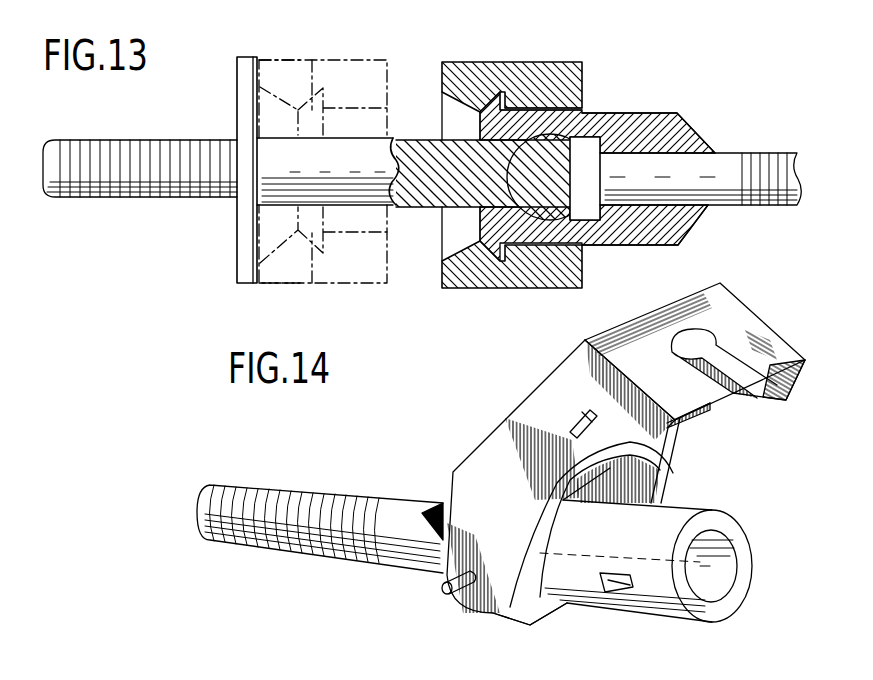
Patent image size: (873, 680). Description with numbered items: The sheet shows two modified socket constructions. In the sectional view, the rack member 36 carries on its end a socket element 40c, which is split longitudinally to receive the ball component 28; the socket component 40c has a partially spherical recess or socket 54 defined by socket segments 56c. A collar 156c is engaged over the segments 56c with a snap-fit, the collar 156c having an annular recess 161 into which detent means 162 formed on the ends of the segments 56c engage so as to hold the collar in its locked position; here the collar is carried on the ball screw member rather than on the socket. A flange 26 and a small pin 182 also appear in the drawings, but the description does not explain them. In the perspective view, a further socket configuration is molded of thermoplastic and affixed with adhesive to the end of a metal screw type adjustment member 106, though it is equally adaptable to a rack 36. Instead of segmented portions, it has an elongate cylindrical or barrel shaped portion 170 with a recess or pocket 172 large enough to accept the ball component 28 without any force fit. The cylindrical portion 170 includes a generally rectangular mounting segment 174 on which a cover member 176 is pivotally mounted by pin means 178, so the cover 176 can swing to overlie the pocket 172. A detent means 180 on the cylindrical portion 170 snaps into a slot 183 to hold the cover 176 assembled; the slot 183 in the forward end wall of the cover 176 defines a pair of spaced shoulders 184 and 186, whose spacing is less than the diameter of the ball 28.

In FIG. 13, the flange 26 is at (257, 203).
In FIG. 13, the ball component 28 is at (588, 213).
In FIG. 13, the rack member 36 is at (735, 162).
In FIG. 13, the socket element 40c is at (645, 120).
In FIG. 14, the socket element 40c is at (800, 314).
In FIG. 13, the partially spherical recess or socket 54 is at (585, 77).
In FIG. 13, the socket segments 56c is at (512, 115).
In FIG. 14, the screw type adjustment member 106 is at (340, 507).
In FIG. 13, the collar 156c is at (360, 77).
In FIG. 13, the annular recess 161 is at (312, 60).
In FIG. 13, the detent means 162 is at (493, 100).
In FIG. 14, the elongate cylindrical or barrel shaped portion 170 is at (665, 520).
In FIG. 14, the recess or pocket 172 is at (730, 553).
In FIG. 14, the mounting segment 174 is at (537, 607).
In FIG. 14, the cover member 176 is at (497, 450).
In FIG. 14, the pin means 178 is at (445, 585).
In FIG. 14, the detent means 180 is at (610, 590).
In FIG. 14, the pin 182 is at (573, 425).
In FIG. 14, the slot 183 is at (716, 345).
In FIG. 14, the shoulder 184 is at (763, 403).
In FIG. 14, the shoulder 186 is at (700, 412).